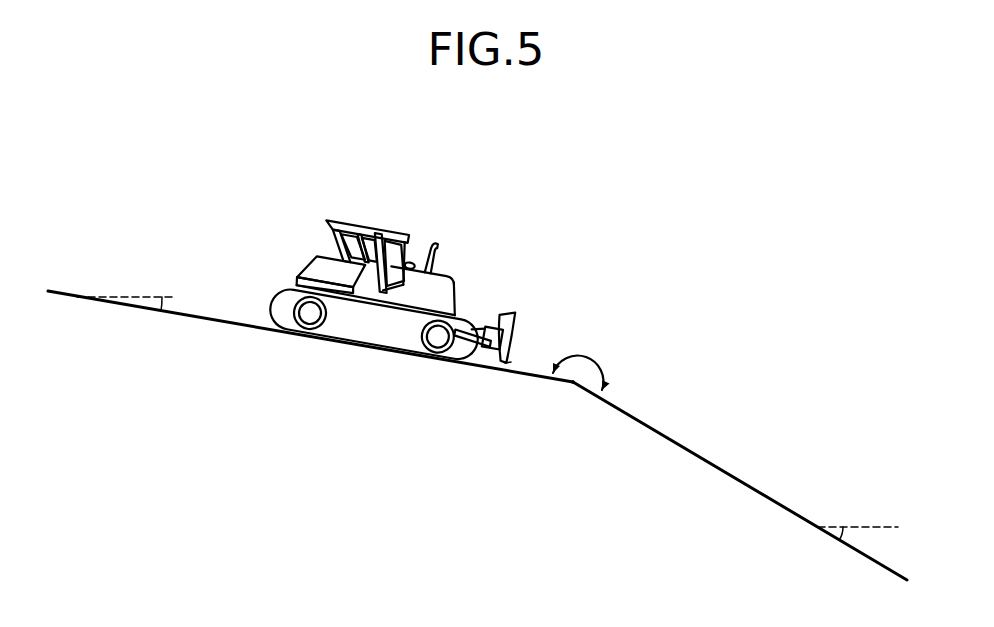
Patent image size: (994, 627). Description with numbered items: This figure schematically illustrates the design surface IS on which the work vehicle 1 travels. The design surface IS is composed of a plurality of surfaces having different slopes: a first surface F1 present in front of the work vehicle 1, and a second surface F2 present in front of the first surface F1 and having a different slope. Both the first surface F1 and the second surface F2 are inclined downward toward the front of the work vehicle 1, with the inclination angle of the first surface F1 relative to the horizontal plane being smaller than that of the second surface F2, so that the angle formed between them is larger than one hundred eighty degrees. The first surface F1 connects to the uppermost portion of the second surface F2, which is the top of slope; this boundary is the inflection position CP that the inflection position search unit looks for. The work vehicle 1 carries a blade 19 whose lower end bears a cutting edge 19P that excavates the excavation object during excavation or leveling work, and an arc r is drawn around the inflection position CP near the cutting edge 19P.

The work vehicle 1 is at (392, 294).
The blade 19 is at (509, 312).
The cutting edge 19P is at (511, 372).
The turning radius / rotation of blade about change point r is at (577, 358).
The inflection position CP is at (592, 388).
The first surface F1 is at (530, 374).
The second surface F2 is at (718, 464).
The design surface IS is at (477, 435).